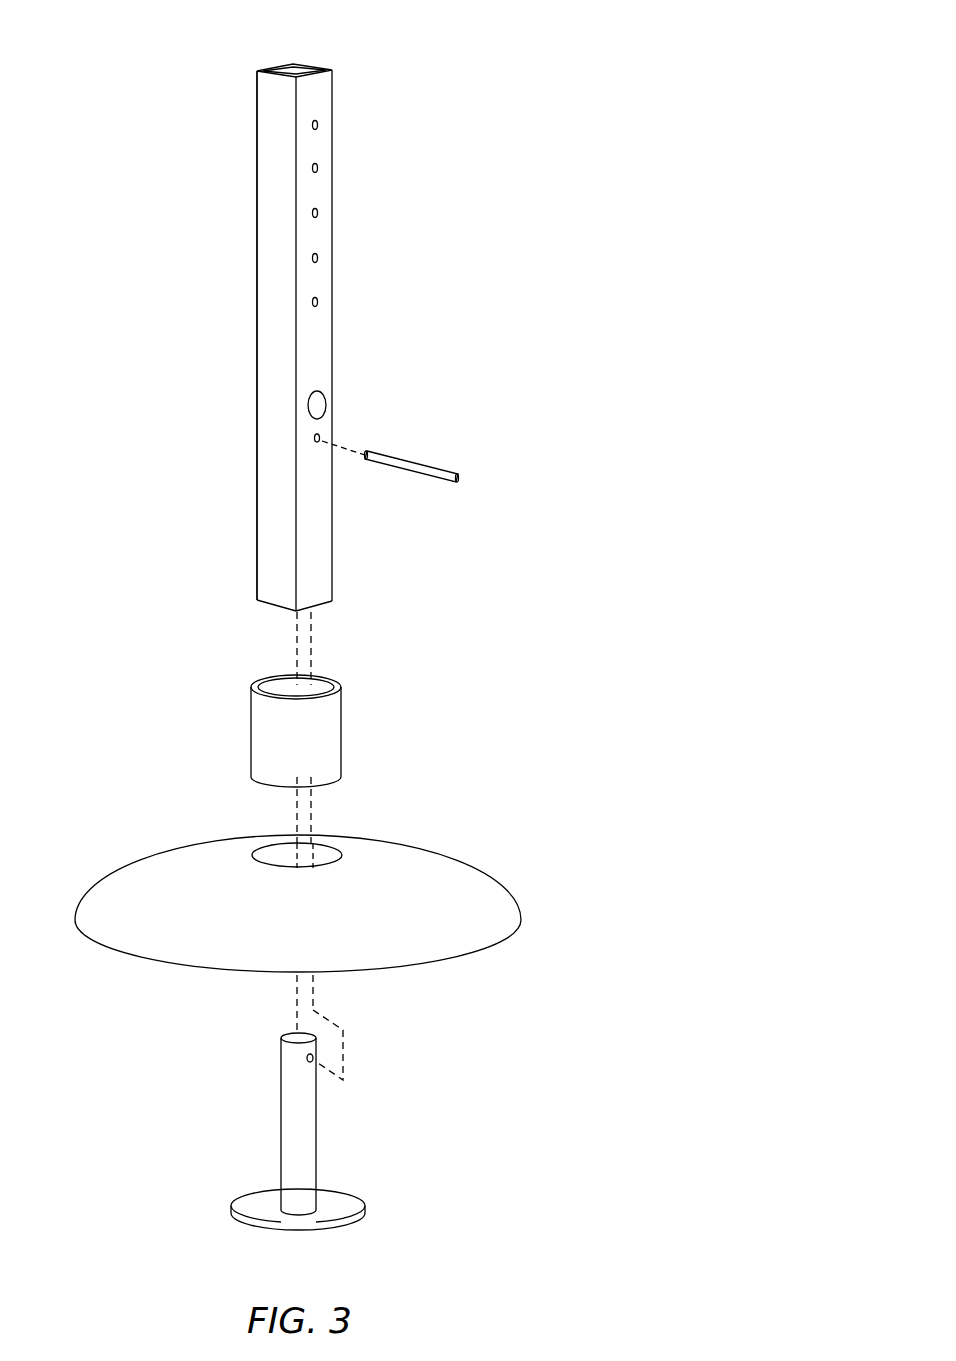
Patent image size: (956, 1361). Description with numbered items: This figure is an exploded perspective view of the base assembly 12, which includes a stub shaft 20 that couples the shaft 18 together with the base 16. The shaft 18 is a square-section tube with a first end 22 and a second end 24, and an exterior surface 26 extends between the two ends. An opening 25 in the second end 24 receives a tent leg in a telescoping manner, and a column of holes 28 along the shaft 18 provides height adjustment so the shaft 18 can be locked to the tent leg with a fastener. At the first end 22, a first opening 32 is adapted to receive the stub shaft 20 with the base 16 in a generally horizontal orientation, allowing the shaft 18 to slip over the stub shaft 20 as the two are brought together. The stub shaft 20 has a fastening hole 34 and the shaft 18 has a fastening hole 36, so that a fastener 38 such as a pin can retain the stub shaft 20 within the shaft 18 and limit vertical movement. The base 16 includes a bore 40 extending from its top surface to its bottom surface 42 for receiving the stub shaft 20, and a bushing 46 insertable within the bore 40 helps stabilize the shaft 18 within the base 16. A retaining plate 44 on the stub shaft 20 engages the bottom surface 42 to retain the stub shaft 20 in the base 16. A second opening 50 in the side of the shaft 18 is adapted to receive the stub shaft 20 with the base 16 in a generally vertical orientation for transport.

The base assembly 12 is at (697, 437).
The base 16 is at (500, 897).
The shaft 18 is at (334, 272).
The stub shaft 20 is at (316, 1140).
The first end 22 is at (257, 598).
The second end 24 is at (256, 70).
The opening 25 is at (293, 72).
The exterior surface 26 is at (270, 222).
The holes 28 is at (317, 168).
The first opening 32 is at (323, 608).
The fastening hole 34 is at (306, 1060).
The fastening hole 36 is at (319, 440).
The fastener 38 is at (444, 470).
The bore 40 is at (330, 850).
The bottom surface 42 is at (427, 966).
The retaining plate 44 is at (357, 1210).
The bushing 46 is at (336, 727).
The second opening 50 is at (312, 403).